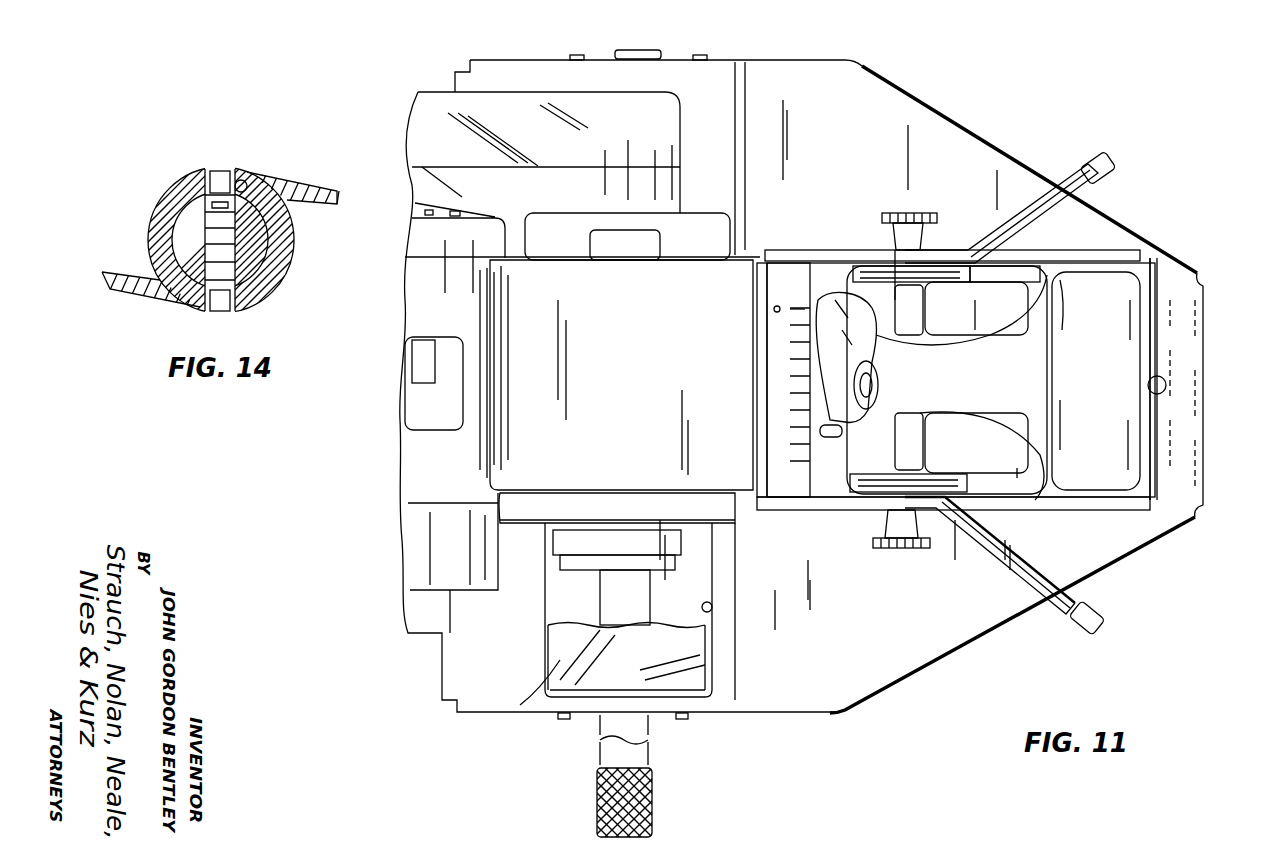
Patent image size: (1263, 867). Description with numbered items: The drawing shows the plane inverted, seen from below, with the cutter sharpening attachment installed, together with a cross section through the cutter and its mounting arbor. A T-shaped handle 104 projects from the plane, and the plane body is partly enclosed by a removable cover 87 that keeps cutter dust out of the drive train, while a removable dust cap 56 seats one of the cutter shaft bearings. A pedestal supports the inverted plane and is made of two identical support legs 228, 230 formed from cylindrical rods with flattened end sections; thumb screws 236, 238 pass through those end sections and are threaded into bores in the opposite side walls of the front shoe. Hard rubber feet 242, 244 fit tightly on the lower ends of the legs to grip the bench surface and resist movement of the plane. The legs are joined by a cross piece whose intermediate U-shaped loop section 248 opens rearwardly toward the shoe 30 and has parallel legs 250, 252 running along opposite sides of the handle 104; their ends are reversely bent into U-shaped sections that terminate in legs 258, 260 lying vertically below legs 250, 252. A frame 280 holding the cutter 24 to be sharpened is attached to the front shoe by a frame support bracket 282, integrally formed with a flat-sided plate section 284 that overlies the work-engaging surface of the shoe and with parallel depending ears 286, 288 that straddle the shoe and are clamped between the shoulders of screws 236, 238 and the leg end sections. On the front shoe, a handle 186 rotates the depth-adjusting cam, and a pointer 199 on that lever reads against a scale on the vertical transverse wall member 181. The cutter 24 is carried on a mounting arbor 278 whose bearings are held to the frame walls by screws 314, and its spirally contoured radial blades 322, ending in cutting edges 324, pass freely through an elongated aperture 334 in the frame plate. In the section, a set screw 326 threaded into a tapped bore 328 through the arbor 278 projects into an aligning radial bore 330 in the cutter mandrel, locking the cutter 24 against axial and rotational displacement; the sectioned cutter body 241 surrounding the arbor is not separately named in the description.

In FIG. 14, the ball housing 241 is at (190, 178).
In FIG. 14, the set screw 326 is at (212, 228).
In FIG. 14, the mounting arbor 278 is at (255, 258).
In FIG. 11, the mounting arbor 278 is at (640, 50).
In FIG. 14, the tapped bore 328 is at (220, 178).
In FIG. 14, the radial bore 330 is at (243, 180).
In FIG. 14, the radial blades 322 is at (310, 186).
In FIG. 14, the cutting edges 324 is at (337, 203).
In FIG. 11, the removable cover 87 is at (650, 92).
In FIG. 11, the shoe 30 is at (606, 384).
In FIG. 11, the frame 280 is at (1150, 240).
In FIG. 11, the frame support bracket 282 is at (1115, 522).
In FIG. 11, the removable dust cap 56 is at (680, 572).
In FIG. 11, the aperture 334 is at (712, 607).
In FIG. 11, the cutter 24 is at (520, 705).
In FIG. 11, the screws 314 is at (578, 55).
In FIG. 11, the depending ear 286 is at (792, 250).
In FIG. 11, the depending ear 288 is at (830, 512).
In FIG. 11, the vertical transverse wall member 181 is at (790, 392).
In FIG. 11, the pointer 199 is at (808, 316).
In FIG. 11, the handle 186 is at (830, 300).
In FIG. 11, the leg 258 is at (985, 270).
In FIG. 11, the leg 260 is at (977, 480).
In FIG. 11, the leg 250 is at (990, 286).
In FIG. 11, the leg 252 is at (1012, 432).
In FIG. 11, the U-shaped loop section 248 is at (1017, 468).
In FIG. 11, the T-shaped handle 104 is at (1078, 388).
In FIG. 11, the flat-sided plate section 284 is at (1158, 415).
In FIG. 11, the support leg 228 is at (1060, 186).
In FIG. 11, the foot 242 is at (1113, 160).
In FIG. 11, the support leg 230 is at (1050, 605).
In FIG. 11, the foot 244 is at (1097, 626).
In FIG. 11, the thumb screw 236 is at (915, 213).
In FIG. 11, the thumb screw 238 is at (905, 550).